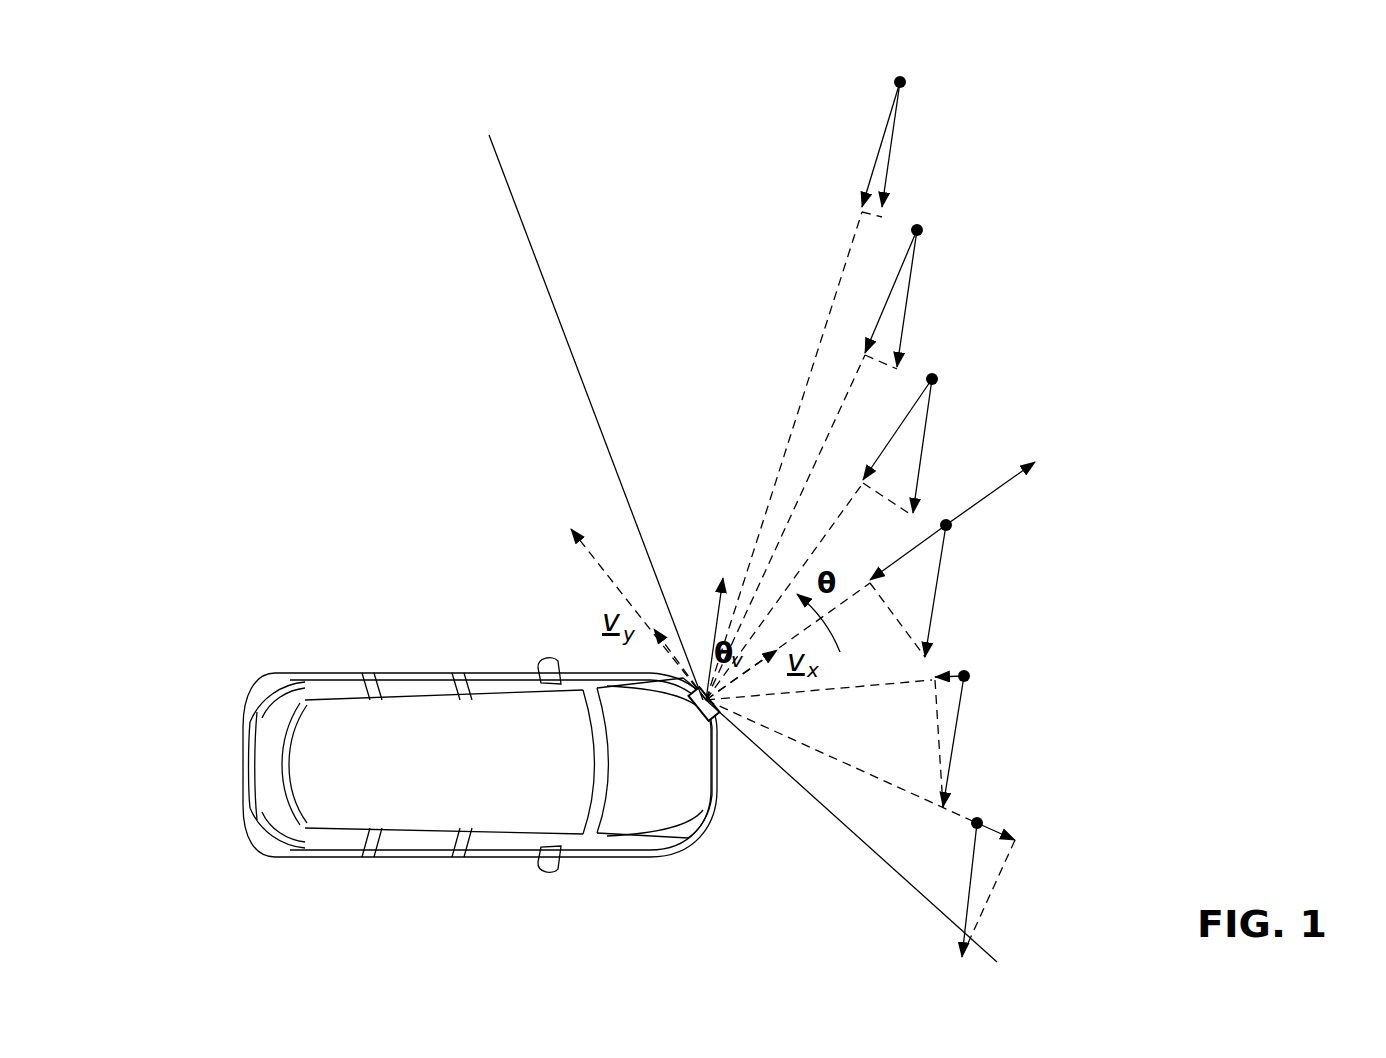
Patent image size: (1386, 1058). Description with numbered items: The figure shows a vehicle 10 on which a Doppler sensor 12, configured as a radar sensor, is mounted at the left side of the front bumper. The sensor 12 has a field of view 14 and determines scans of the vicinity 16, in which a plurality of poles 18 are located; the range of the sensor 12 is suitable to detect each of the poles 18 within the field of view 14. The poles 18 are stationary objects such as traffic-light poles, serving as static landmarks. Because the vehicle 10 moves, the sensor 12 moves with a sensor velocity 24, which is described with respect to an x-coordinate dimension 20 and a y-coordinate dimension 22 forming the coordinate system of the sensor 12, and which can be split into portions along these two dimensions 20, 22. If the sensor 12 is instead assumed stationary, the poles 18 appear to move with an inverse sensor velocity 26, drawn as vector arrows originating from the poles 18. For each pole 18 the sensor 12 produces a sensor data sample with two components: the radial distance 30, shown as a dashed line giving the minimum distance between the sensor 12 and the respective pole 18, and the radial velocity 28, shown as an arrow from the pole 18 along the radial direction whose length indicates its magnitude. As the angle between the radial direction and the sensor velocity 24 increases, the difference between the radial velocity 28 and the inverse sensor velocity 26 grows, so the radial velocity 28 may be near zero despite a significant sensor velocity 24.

The vehicle 10 is at (258, 856).
The Doppler sensor 12 is at (717, 723).
The field of view 14 is at (515, 203).
The vicinity 16 is at (978, 497).
The poles 18 is at (898, 78).
The x-coordinate dimension 20 is at (1000, 488).
The y-coordinate dimension 22 is at (598, 570).
The sensor velocity 24 is at (710, 516).
The inverse sensor velocity 26 is at (893, 140).
The radial velocity 28 is at (877, 158).
The radial distance 30 is at (833, 295).